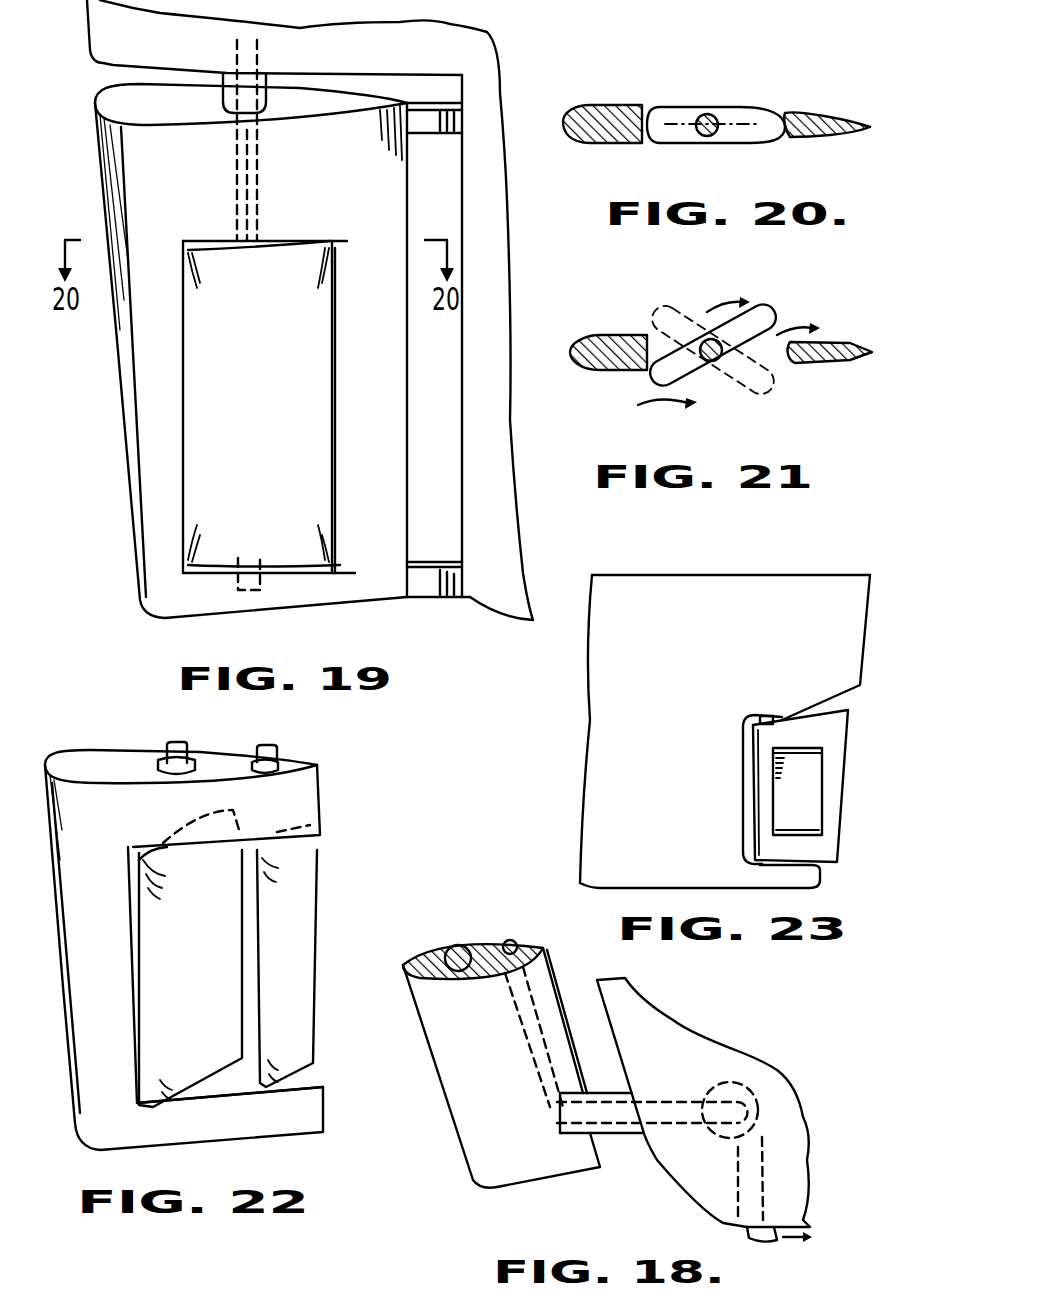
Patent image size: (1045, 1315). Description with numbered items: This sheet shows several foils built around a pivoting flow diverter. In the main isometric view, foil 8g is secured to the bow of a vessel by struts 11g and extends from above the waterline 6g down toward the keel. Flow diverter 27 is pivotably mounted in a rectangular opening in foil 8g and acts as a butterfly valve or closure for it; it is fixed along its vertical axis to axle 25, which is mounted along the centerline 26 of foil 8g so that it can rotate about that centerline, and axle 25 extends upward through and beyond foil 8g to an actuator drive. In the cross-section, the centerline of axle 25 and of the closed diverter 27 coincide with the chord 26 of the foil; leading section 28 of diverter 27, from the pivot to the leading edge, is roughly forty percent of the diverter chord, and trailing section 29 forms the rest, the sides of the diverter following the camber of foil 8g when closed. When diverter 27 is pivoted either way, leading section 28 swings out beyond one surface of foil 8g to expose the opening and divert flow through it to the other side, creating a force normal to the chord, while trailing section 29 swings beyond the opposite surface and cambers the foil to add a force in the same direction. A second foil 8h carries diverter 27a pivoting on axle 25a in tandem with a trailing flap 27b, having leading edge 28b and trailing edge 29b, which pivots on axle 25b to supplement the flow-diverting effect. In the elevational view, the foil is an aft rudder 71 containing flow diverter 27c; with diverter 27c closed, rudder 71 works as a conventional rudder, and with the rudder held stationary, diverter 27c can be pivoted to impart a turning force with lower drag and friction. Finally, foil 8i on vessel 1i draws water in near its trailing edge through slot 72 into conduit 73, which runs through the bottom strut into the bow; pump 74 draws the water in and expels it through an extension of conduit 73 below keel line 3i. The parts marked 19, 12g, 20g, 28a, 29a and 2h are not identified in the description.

In FIG. 19, the top plate 19 is at (505, 10).
In FIG. 19, the waterline 6g is at (97, 197).
In FIG. 19, the axle 25 is at (235, 177).
In FIG. 20, the axle 25 is at (710, 114).
In FIG. 21, the axle 25 is at (722, 365).
In FIG. 19, the centerline 26 is at (258, 168).
In FIG. 19, the struts 11g is at (446, 133).
In FIG. 19, the leading section 28 is at (184, 358).
In FIG. 20, the leading section 28 is at (655, 104).
In FIG. 21, the leading section 28 is at (655, 387).
In FIG. 19, the trailing section 29 is at (335, 332).
In FIG. 20, the trailing section 29 is at (788, 110).
In FIG. 21, the trailing section 29 is at (783, 307).
In FIG. 19, the flow diverter 27 is at (278, 402).
In FIG. 20, the flow diverter 27 is at (745, 105).
In FIG. 21, the flow diverter 27 is at (688, 316).
In FIG. 19, the body wall 12g is at (120, 387).
In FIG. 20, the body wall 12g is at (565, 112).
In FIG. 19, the channel 20g is at (410, 434).
In FIG. 20, the channel 20g is at (870, 127).
In FIG. 19, the foil 8g is at (132, 497).
In FIG. 20, the foil 8g is at (605, 147).
In FIG. 21, the foil 8g is at (618, 336).
In FIG. 22, the axle 25a is at (168, 745).
In FIG. 22, the axle 25b is at (277, 750).
In FIG. 22, the diverter 27a is at (213, 972).
In FIG. 22, the trailing flap 27b is at (314, 953).
In FIG. 22, the first panel end 28a is at (139, 981).
In FIG. 22, the leading edge 28b is at (258, 1007).
In FIG. 22, the first panel end 29a is at (244, 914).
In FIG. 22, the trailing edge 29b is at (317, 972).
In FIG. 22, the foil 8h is at (63, 980).
In FIG. 22, the base 2h is at (70, 1047).
In FIG. 23, the aft rudder 71 is at (818, 705).
In FIG. 23, the flow diverter 27c is at (818, 812).
In FIG. 18, the foil 8i is at (446, 1095).
In FIG. 18, the slot 72 is at (560, 1000).
In FIG. 18, the conduit 73 is at (562, 1127).
In FIG. 18, the pump 74 is at (722, 1147).
In FIG. 18, the vessel 1i is at (750, 1055).
In FIG. 18, the keel line 3i is at (810, 1223).